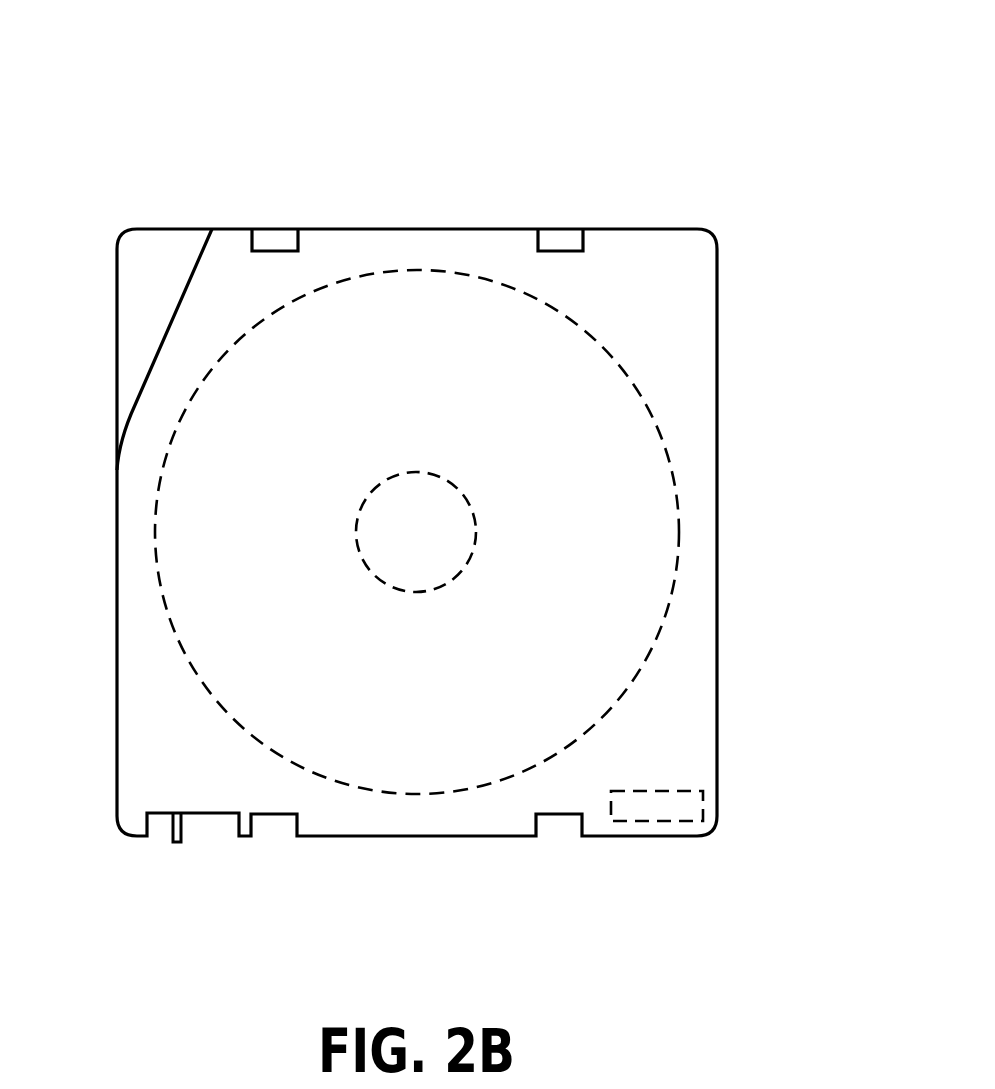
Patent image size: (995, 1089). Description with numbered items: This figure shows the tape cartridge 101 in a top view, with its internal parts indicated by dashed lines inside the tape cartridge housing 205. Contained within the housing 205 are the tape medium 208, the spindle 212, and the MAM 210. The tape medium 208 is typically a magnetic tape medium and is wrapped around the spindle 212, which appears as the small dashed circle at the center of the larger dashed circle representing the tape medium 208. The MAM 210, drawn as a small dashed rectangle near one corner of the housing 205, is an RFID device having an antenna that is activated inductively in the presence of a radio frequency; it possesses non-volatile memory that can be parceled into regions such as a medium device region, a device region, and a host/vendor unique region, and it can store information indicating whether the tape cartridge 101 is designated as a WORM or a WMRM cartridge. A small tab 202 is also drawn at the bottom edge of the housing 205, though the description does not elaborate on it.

The tape cartridge 101 is at (468, 75).
The tab 202 is at (177, 842).
The tape cartridge housing 205 is at (188, 228).
The tape medium 208 is at (448, 270).
The MAM 210 is at (657, 821).
The spindle 212 is at (477, 535).